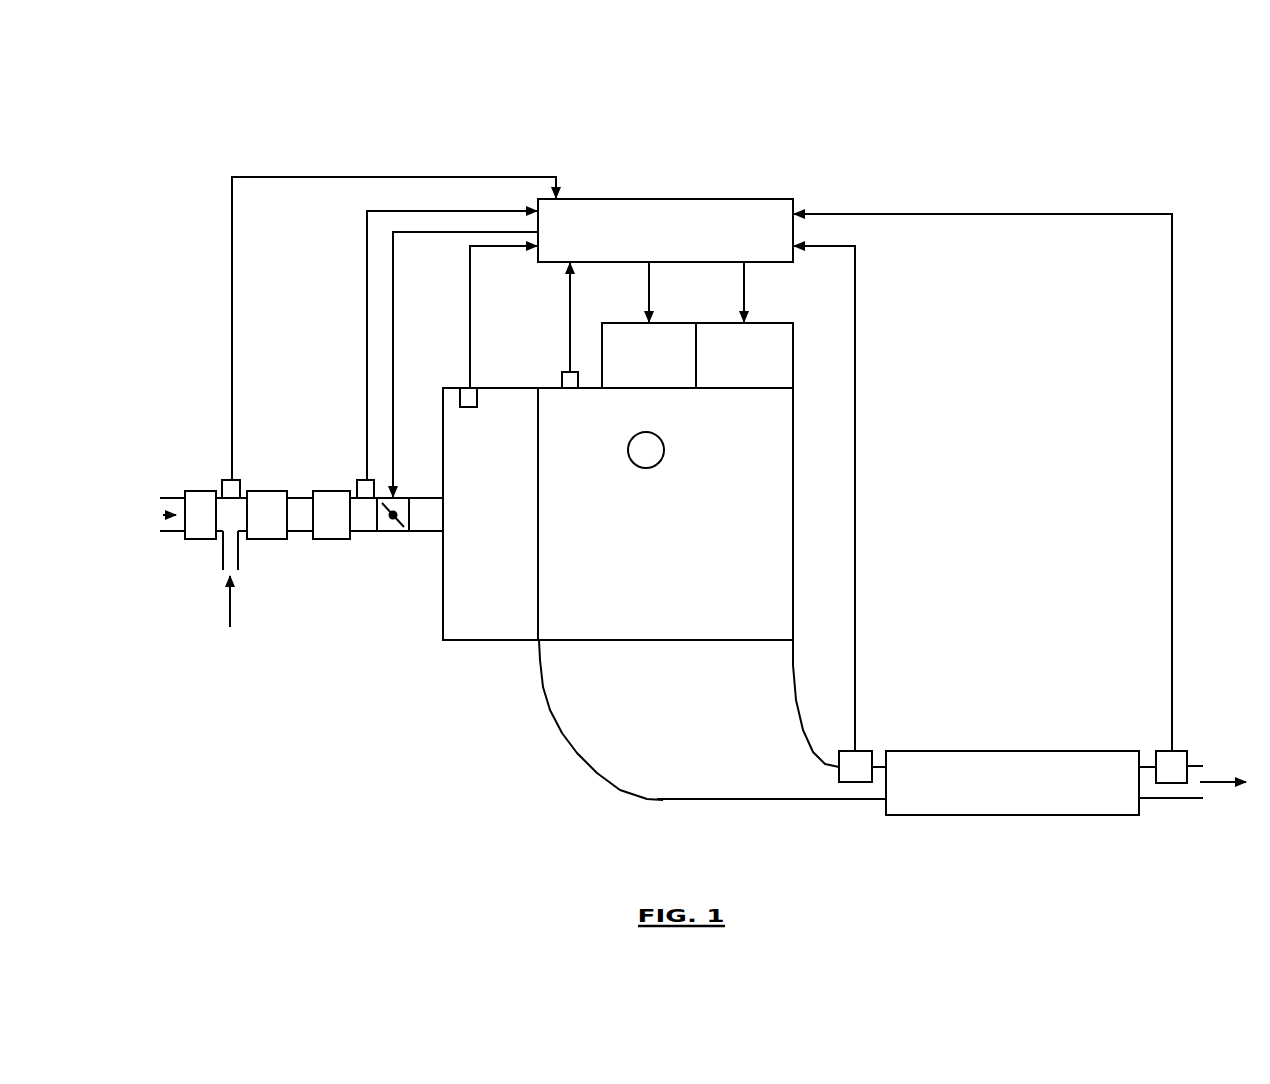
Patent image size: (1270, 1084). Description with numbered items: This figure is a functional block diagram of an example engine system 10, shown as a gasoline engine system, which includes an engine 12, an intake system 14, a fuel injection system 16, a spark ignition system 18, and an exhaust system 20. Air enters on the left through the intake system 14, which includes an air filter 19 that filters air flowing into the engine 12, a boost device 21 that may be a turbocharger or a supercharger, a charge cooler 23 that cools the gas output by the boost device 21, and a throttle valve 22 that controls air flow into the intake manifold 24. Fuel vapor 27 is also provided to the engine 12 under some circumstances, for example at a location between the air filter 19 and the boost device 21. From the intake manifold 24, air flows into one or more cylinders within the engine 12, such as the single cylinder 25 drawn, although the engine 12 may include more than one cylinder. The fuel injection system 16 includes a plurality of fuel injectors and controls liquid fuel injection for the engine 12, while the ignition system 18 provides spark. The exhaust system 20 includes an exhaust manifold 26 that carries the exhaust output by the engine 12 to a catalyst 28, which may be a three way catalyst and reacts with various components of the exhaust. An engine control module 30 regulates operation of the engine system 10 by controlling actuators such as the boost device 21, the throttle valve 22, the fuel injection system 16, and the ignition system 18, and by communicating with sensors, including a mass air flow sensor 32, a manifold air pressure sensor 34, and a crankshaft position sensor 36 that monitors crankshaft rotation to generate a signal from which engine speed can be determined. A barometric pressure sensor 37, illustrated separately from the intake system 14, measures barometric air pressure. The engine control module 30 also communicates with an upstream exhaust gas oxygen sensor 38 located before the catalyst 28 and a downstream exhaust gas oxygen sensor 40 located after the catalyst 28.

The engine system 10 is at (207, 115).
The engine 12 is at (793, 512).
The intake system 14 is at (294, 285).
The fuel injection system 16 is at (616, 323).
The ignition system 18 is at (778, 323).
The air filter 19 is at (201, 491).
The exhaust system 20 is at (750, 830).
The boost device 21 is at (262, 491).
The throttle valve 22 is at (405, 498).
The charge cooler 23 is at (326, 491).
The intake manifold 24 is at (443, 595).
The cylinder 25 is at (664, 449).
The exhaust manifold 26 is at (538, 655).
The fuel vapor 27 is at (231, 598).
The catalyst 28 is at (1010, 751).
The engine control module 30 is at (665, 199).
The mass air flow sensor 32 is at (363, 480).
The manifold air pressure sensor 34 is at (477, 402).
The crankshaft position sensor 36 is at (562, 372).
The barometric pressure sensor 37 is at (225, 480).
The upstream exhaust gas oxygen sensor 38 is at (848, 751).
The downstream exhaust gas oxygen sensor 40 is at (1158, 751).